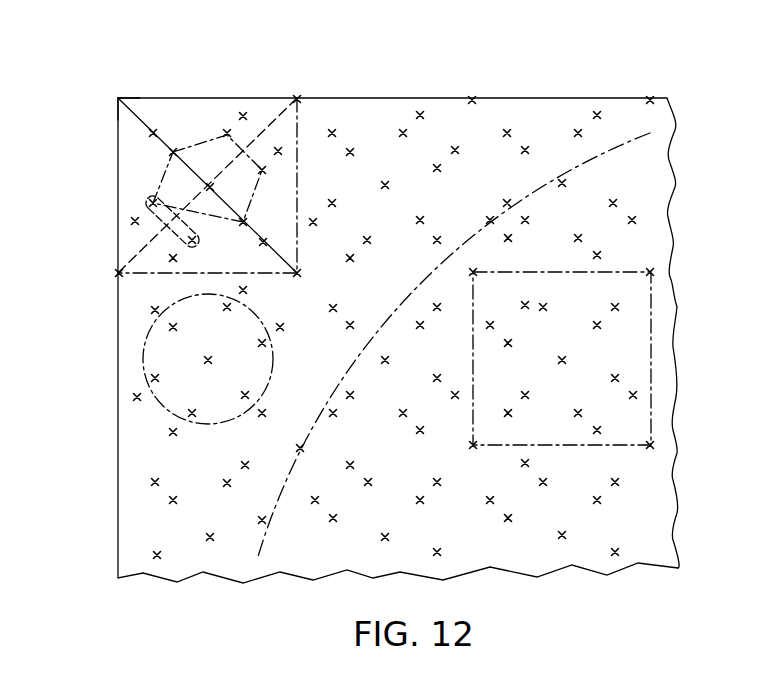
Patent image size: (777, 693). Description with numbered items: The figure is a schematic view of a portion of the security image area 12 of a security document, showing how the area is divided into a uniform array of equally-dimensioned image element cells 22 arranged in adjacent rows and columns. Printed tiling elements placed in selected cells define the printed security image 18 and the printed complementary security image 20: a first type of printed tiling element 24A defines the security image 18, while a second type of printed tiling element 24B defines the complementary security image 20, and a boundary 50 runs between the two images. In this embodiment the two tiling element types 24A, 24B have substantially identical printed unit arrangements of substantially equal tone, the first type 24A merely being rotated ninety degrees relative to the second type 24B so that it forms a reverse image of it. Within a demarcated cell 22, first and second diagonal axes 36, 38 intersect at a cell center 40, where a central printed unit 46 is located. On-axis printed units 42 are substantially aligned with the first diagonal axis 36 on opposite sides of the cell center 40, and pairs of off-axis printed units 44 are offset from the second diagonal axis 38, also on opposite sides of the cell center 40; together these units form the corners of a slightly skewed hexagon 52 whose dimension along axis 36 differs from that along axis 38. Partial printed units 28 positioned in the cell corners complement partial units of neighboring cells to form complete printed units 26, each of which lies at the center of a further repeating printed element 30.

The security image area 12 is at (583, 98).
The printed security image 18 is at (653, 528).
The printed complementary security image 20 is at (563, 130).
The image element cell 22 is at (433, 248).
The first type of printed tiling element 24A is at (648, 323).
The second type of printed tiling element 24B is at (205, 98).
The complete printed unit 26 is at (297, 273).
The partial printed unit 28 is at (118, 99).
The repeating printed element 30 is at (200, 423).
The first diagonal axis 36 is at (137, 110).
The second diagonal axis 38 is at (118, 262).
The cell center 40 is at (210, 187).
The on-axis printed unit 42 is at (173, 152).
The off-axis printed unit 44 is at (147, 197).
The central printed unit 46 is at (212, 360).
The boundary 50 is at (543, 185).
The skewed hexagon 52 is at (250, 205).